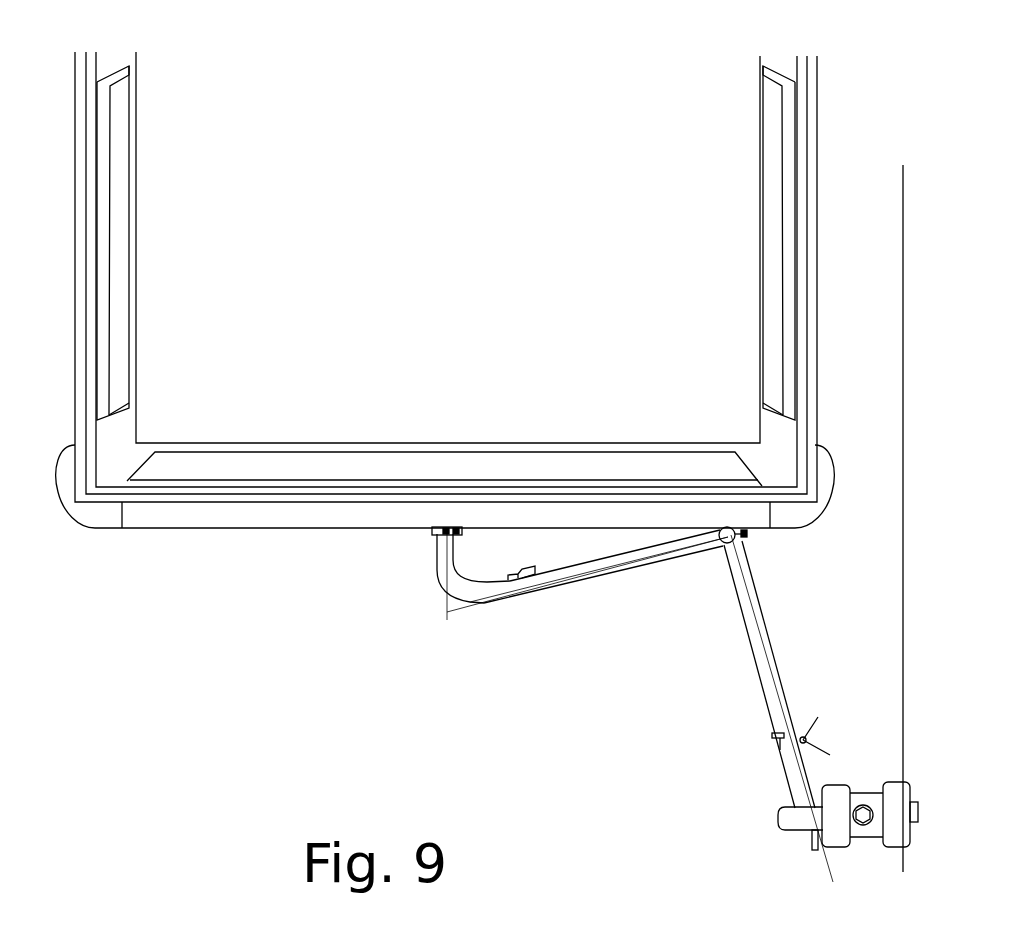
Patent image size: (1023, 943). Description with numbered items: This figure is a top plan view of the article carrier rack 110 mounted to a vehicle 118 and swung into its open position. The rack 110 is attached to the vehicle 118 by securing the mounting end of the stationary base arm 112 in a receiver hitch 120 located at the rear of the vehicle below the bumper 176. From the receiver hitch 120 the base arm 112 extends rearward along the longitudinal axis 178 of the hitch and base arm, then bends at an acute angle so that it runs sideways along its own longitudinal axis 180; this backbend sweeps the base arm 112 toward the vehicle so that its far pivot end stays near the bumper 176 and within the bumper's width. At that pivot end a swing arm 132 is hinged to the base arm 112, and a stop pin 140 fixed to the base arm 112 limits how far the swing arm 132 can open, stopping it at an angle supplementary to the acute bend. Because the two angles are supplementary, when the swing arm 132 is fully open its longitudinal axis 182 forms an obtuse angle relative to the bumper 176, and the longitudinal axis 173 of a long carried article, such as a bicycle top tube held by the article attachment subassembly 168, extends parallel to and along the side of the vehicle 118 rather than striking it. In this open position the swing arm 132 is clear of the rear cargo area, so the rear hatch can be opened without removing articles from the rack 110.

The rack 110 is at (659, 647).
The base arm 112 is at (645, 572).
The vehicle 118 is at (120, 563).
The receiver hitch 120 is at (425, 536).
The swing arm 132 is at (773, 632).
The stop pin 140 is at (750, 538).
The article attachment subassembly 168 is at (756, 815).
The longitudinal axis 173 is at (905, 523).
The bumper 176 is at (834, 494).
The longitudinal axis 178 is at (437, 600).
The longitudinal axis 180 is at (545, 583).
The longitudinal axis 182 is at (772, 690).